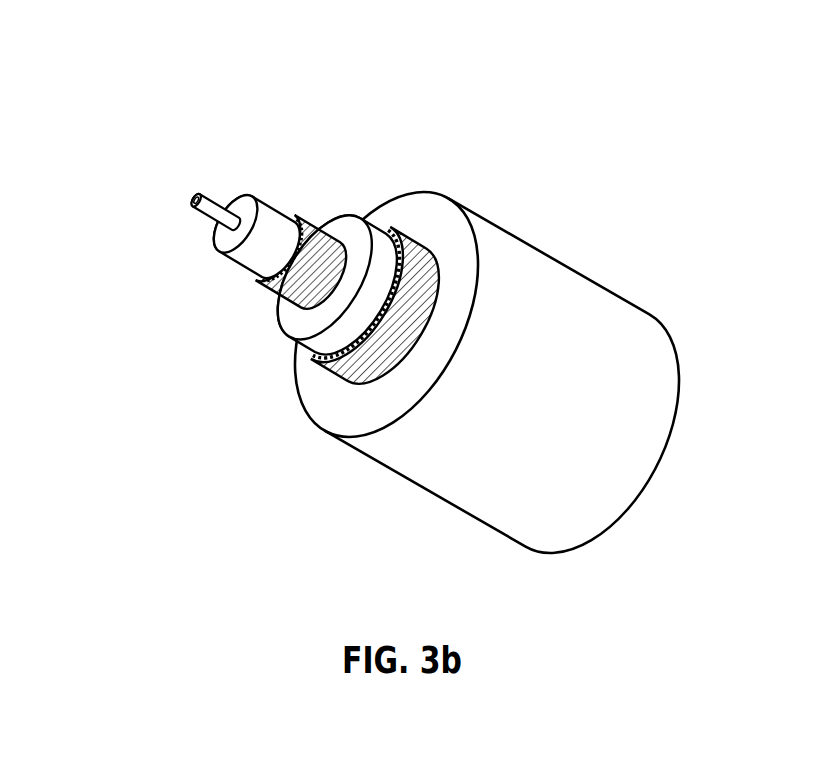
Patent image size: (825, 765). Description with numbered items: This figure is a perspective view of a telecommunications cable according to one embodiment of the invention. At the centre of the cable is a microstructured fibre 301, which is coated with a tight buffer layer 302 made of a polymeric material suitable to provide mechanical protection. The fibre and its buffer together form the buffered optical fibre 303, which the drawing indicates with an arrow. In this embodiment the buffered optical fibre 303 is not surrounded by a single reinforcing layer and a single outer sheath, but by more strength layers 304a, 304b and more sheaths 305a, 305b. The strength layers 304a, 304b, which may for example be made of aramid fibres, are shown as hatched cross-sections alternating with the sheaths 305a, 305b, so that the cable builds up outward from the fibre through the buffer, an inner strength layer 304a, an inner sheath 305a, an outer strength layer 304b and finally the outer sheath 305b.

The microstructured fibre 301 is at (210, 210).
The tight buffer layer 302 is at (257, 265).
The buffered optical fibre 303 is at (182, 255).
The strength layer 304a is at (307, 237).
The strength layer 304b is at (415, 247).
The sheath 305a is at (292, 318).
The sheath 305b is at (633, 358).